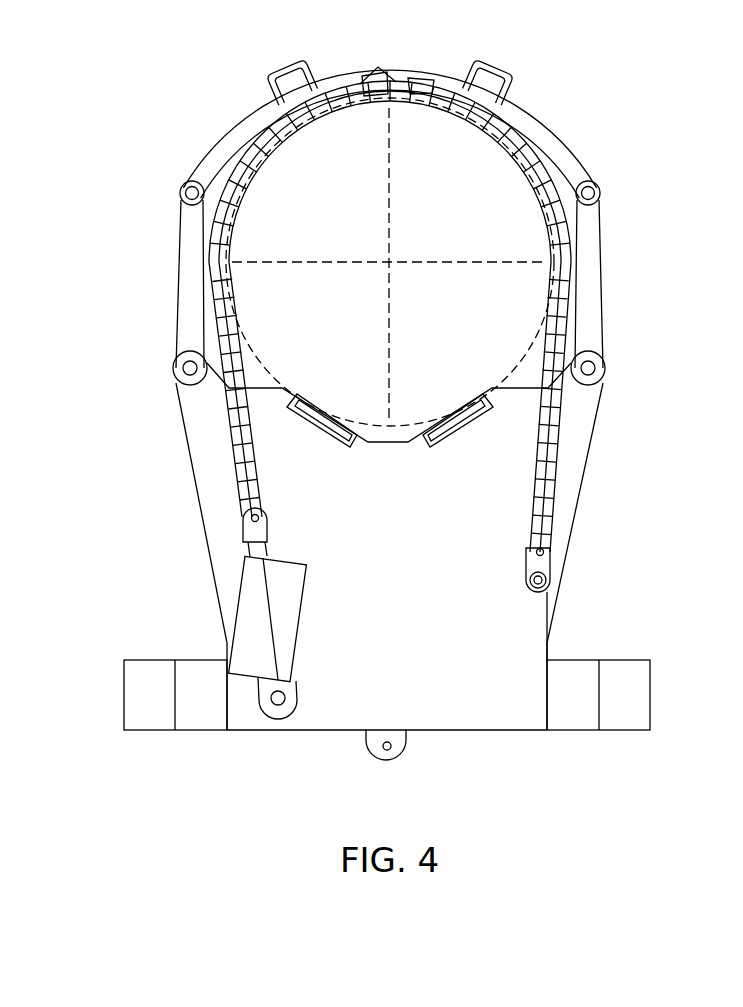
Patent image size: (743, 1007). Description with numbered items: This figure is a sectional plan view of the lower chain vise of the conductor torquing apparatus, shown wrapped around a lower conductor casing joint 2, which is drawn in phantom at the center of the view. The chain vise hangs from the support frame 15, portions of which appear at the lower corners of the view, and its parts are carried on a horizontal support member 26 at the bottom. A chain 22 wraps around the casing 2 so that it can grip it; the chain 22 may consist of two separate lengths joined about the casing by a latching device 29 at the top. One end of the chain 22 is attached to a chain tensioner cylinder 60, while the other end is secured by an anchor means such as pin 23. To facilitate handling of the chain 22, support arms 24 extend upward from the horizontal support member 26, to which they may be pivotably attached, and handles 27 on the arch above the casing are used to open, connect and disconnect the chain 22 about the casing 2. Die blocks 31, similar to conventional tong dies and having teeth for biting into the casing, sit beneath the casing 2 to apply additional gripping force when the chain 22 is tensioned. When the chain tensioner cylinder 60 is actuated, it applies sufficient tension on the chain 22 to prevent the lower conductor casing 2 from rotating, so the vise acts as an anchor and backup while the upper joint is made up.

The lower conductor casing joint 2 is at (276, 364).
The support frame 15 is at (138, 688).
The chain 22 is at (558, 298).
The pin 23 is at (549, 582).
The support arms 24 is at (213, 150).
The horizontal support member 26 is at (445, 698).
The handles 27 is at (517, 82).
The latching device 29 is at (383, 66).
The die blocks 31 is at (327, 432).
The chain tensioner cylinder 60 is at (247, 598).